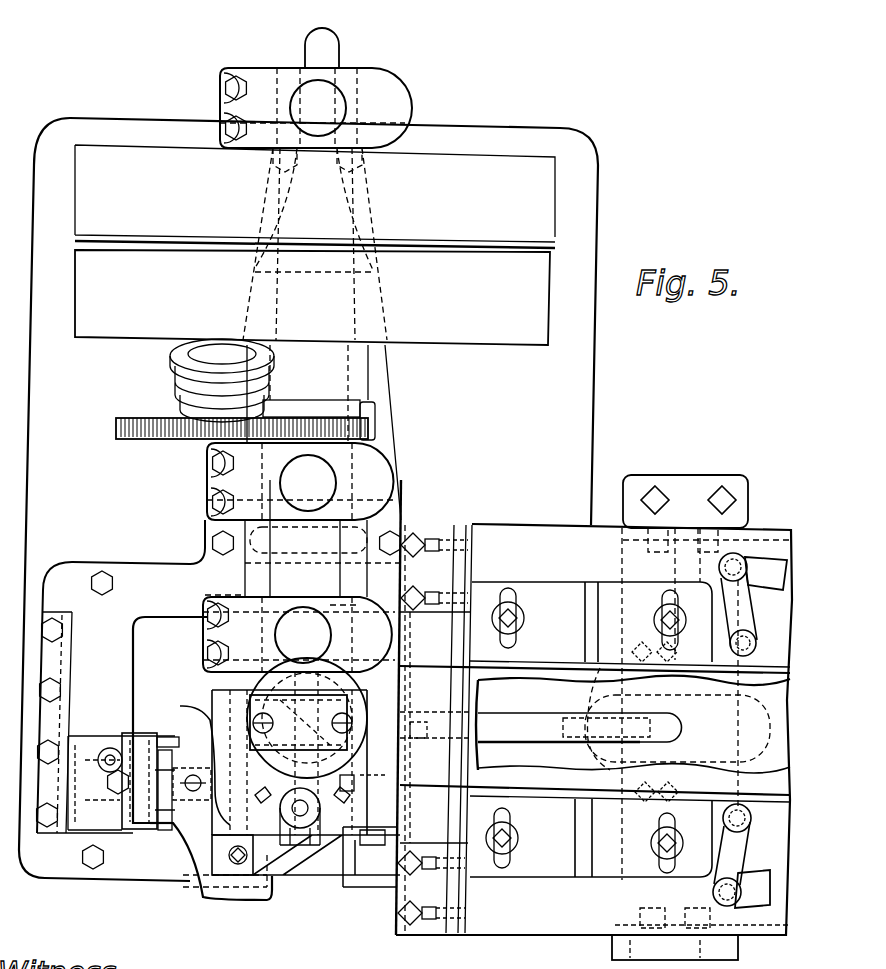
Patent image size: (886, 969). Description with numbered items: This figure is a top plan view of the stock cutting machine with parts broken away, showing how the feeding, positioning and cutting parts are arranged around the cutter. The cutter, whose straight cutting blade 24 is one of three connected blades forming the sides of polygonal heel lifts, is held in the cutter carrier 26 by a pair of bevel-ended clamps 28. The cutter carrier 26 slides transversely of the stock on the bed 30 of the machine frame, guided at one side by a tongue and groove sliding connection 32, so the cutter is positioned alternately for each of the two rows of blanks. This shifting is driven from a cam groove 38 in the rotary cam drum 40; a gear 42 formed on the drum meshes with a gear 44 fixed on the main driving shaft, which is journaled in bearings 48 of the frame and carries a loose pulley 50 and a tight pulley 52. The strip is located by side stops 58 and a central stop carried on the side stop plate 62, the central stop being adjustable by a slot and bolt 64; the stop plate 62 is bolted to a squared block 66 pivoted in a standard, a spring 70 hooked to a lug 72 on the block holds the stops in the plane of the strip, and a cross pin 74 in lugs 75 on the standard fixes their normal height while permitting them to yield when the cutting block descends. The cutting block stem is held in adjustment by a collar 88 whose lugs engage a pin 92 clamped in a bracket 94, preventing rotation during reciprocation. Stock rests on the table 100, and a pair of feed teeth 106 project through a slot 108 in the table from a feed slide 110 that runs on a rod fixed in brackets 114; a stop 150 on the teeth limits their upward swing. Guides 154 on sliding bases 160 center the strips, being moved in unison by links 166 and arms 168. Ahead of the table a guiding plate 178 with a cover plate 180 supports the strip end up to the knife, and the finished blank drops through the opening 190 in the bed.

The cutting blade 24 is at (285, 873).
The cutter carrier 26 is at (215, 705).
The bevel-ended clamps 28 is at (242, 868).
The bed 30 is at (378, 878).
The tongue and groove sliding connection 32 is at (308, 499).
The cam groove 38 is at (176, 394).
The rotary cam drum 40 is at (172, 353).
The gear 42 is at (242, 445).
The gear 44 is at (375, 432).
The bearings 48 is at (402, 108).
The loose pulley 50 is at (312, 297).
The tight pulley 52 is at (315, 196).
The side stops 58 is at (268, 888).
The side stop plate 62 is at (245, 695).
The slot and bolt 64 is at (193, 792).
The squared block 66 is at (135, 825).
The spring 70 is at (100, 752).
The lug 72 is at (112, 750).
The cross pin 74 is at (172, 760).
The lugs 75 is at (166, 737).
The collar 88 is at (305, 810).
The pin 92 is at (400, 812).
The bracket 94 is at (400, 831).
The table 100 is at (594, 717).
The feed teeth 106 is at (398, 690).
The slot 108 is at (633, 719).
The feed slide 110 is at (580, 727).
The brackets 114 is at (567, 744).
The stop 150 is at (425, 740).
The guides 154 is at (560, 662).
The bases 160 is at (575, 592).
The links 166 is at (737, 607).
The arms 168 is at (760, 560).
The guiding plate 178 is at (386, 845).
The cover plate 180 is at (395, 780).
The opening 190 is at (267, 707).